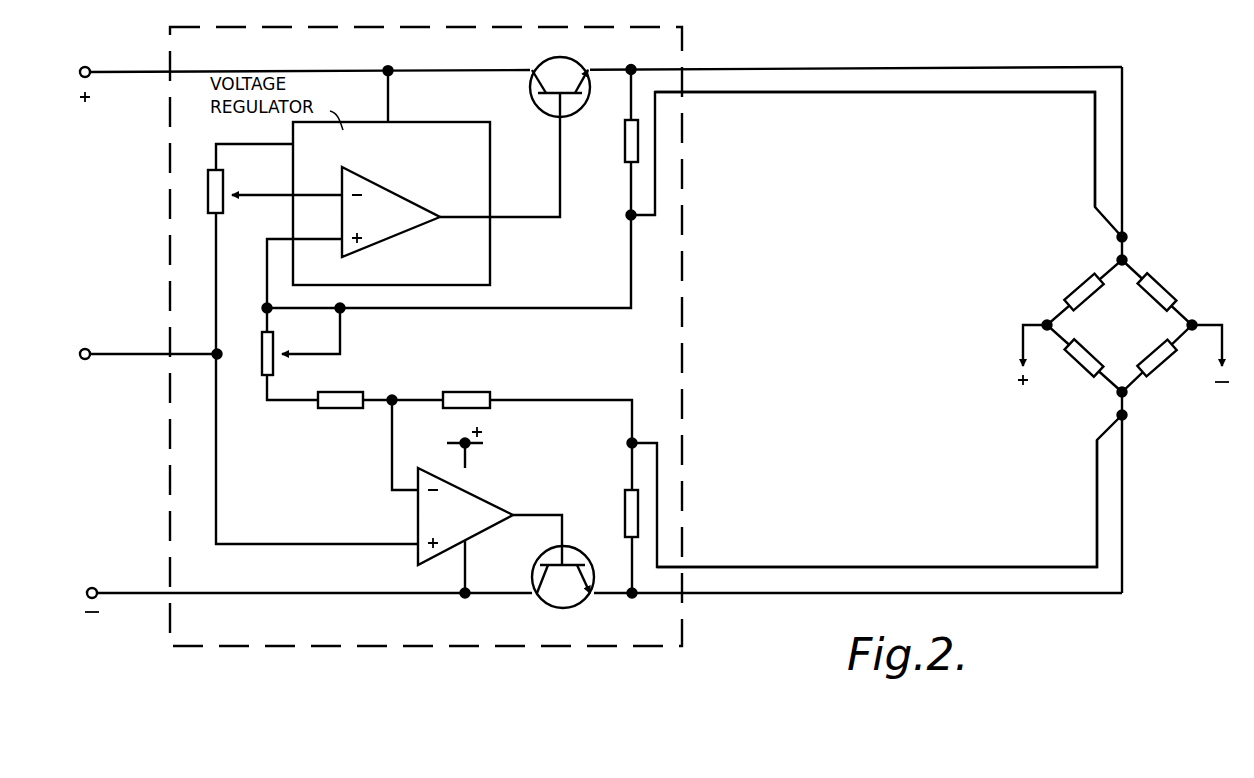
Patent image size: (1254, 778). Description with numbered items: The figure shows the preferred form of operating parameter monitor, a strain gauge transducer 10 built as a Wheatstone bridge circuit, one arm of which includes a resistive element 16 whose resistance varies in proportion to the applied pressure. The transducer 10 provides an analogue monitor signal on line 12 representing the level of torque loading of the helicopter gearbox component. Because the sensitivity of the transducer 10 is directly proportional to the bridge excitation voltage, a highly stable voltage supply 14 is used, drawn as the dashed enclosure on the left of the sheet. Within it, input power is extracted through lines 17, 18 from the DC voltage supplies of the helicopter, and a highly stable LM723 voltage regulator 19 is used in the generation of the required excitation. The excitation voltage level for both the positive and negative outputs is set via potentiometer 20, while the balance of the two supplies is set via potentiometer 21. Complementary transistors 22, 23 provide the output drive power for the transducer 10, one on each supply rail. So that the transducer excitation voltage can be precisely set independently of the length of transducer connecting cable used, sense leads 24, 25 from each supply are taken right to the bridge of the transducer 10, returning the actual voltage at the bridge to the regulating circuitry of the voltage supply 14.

The operating parameter monitor 10 is at (1113, 322).
The line 12 is at (1022, 343).
The voltage supply 14 is at (418, 27).
The resistive element 16 is at (1072, 294).
The line 17 is at (123, 70).
The line 18 is at (121, 592).
The voltage regulator 19 is at (373, 182).
The potentiometer 20 is at (207, 184).
The potentiometer 21 is at (260, 353).
The transistor 22 is at (530, 88).
The transistor 23 is at (548, 605).
The sense lead 24 is at (1095, 152).
The sense lead 25 is at (1097, 507).